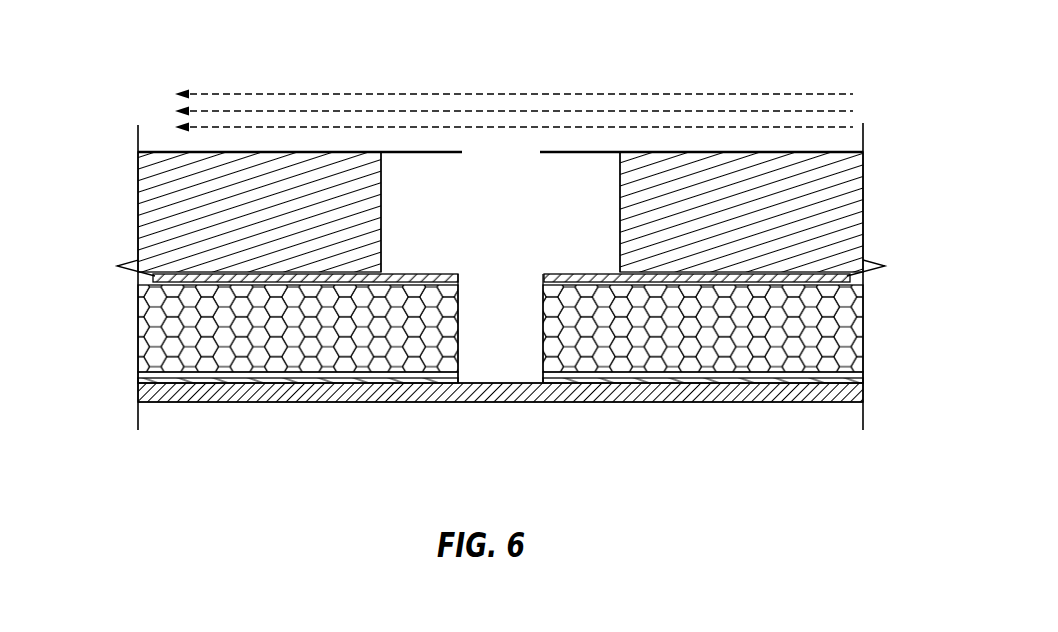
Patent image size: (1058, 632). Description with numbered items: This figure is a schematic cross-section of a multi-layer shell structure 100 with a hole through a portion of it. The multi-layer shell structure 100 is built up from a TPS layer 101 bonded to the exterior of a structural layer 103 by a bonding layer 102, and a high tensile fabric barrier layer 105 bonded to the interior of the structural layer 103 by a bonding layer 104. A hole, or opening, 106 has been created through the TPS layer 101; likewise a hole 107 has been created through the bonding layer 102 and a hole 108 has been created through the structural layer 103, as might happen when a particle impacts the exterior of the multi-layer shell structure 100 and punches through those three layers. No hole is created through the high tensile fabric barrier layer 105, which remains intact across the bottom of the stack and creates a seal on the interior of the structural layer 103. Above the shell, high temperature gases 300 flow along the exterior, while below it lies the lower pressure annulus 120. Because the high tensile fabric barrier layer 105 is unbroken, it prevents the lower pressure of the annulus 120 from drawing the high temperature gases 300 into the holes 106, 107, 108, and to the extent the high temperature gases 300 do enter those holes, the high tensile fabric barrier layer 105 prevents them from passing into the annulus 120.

The multi-layer shell structure 100 is at (163, 72).
The TPS layer 101 is at (768, 227).
The bonding layer 102 is at (596, 273).
The structural layer 103 is at (740, 341).
The bonding layer 104 is at (862, 381).
The high tensile fabric barrier layer 105 is at (862, 393).
The hole 106 is at (468, 160).
The hole 107 is at (470, 264).
The hole 108 is at (512, 372).
The annulus 120 is at (523, 465).
The high temperature gases 300 is at (515, 94).